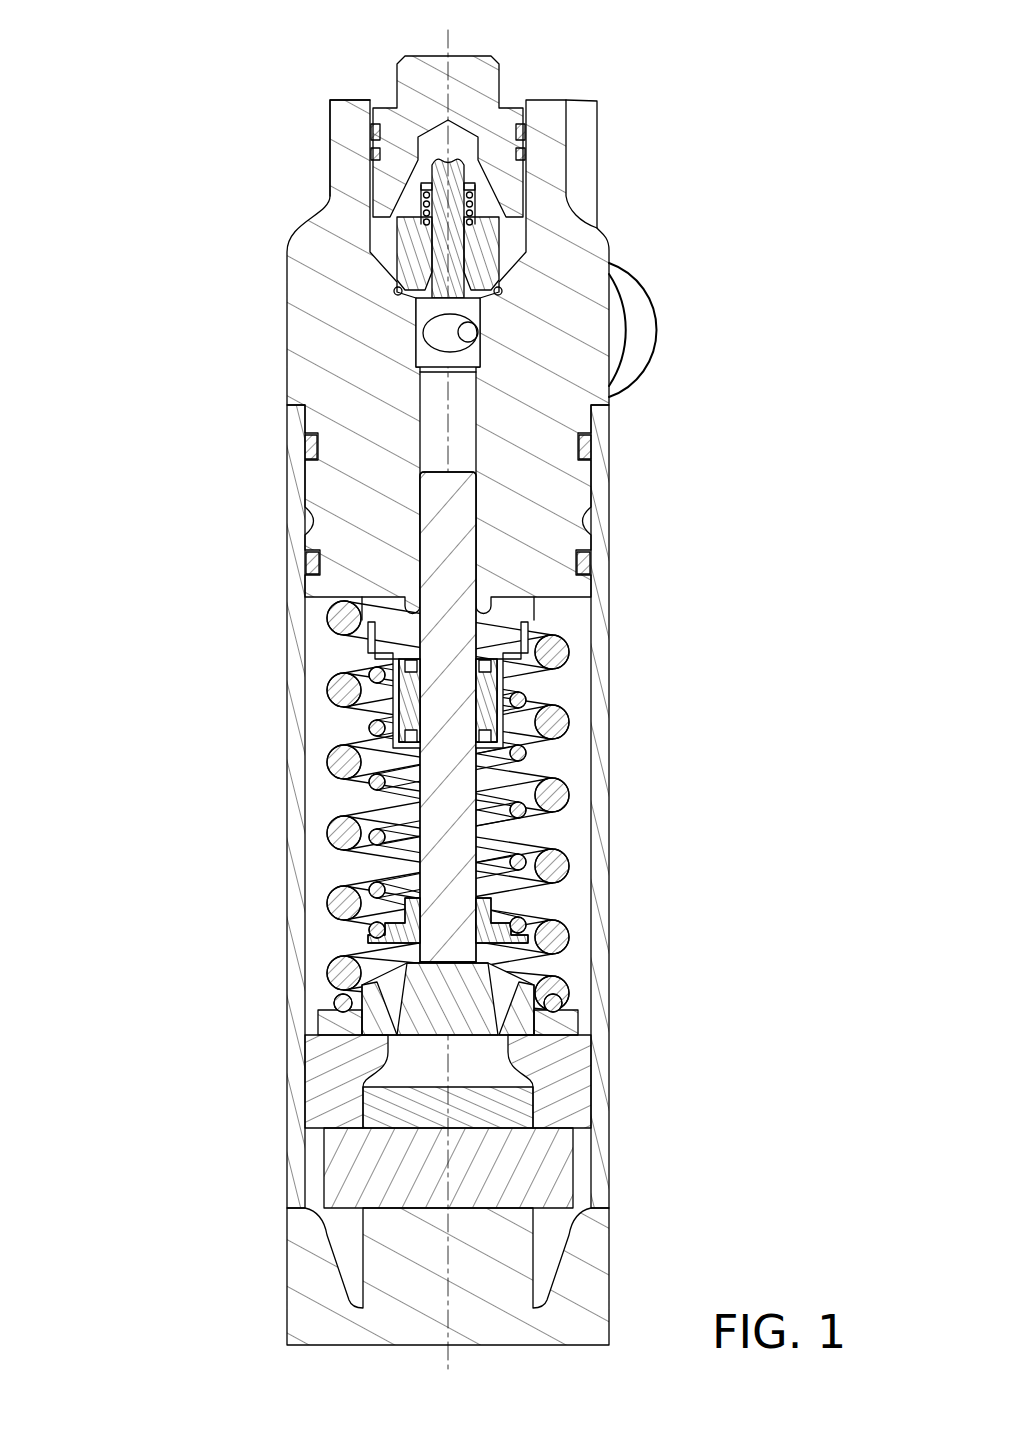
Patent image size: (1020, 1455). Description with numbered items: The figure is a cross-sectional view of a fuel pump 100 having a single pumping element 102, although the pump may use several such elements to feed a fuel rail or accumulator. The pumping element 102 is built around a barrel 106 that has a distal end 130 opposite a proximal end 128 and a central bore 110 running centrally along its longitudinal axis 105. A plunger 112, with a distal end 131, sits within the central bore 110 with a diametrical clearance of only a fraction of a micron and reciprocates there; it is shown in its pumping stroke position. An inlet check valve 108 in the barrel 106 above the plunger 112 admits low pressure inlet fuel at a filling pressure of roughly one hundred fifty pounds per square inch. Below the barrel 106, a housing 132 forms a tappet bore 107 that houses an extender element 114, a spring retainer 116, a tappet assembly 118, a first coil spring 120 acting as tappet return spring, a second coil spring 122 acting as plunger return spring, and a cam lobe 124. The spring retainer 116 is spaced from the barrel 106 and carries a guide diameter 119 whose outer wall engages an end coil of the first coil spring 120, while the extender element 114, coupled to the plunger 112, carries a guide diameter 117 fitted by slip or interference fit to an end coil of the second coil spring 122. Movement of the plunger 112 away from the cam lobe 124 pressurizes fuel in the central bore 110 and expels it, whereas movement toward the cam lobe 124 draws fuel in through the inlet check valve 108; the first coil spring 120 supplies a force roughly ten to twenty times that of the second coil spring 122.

The fuel pump 100 is at (205, 70).
The pumping element 102 is at (295, 190).
The longitudinal axis 105 is at (451, 53).
The barrel 106 is at (320, 310).
The tappet bore 107 is at (575, 688).
The inlet check valve 108 is at (468, 197).
The central bore 110 is at (428, 441).
The plunger 112 is at (441, 542).
The extender element 114 is at (402, 913).
The spring retainer 116 is at (343, 1010).
The guide diameter 117 is at (372, 938).
The tappet assembly 118 is at (573, 1078).
The guide diameter 119 is at (525, 993).
The first coil spring 120 is at (560, 797).
The second coil spring 122 is at (513, 925).
The cam lobe 124 is at (387, 1263).
The proximal end 128 is at (410, 640).
The distal end 130 is at (348, 100).
The distal end 131 is at (470, 490).
The housing 132 is at (290, 480).